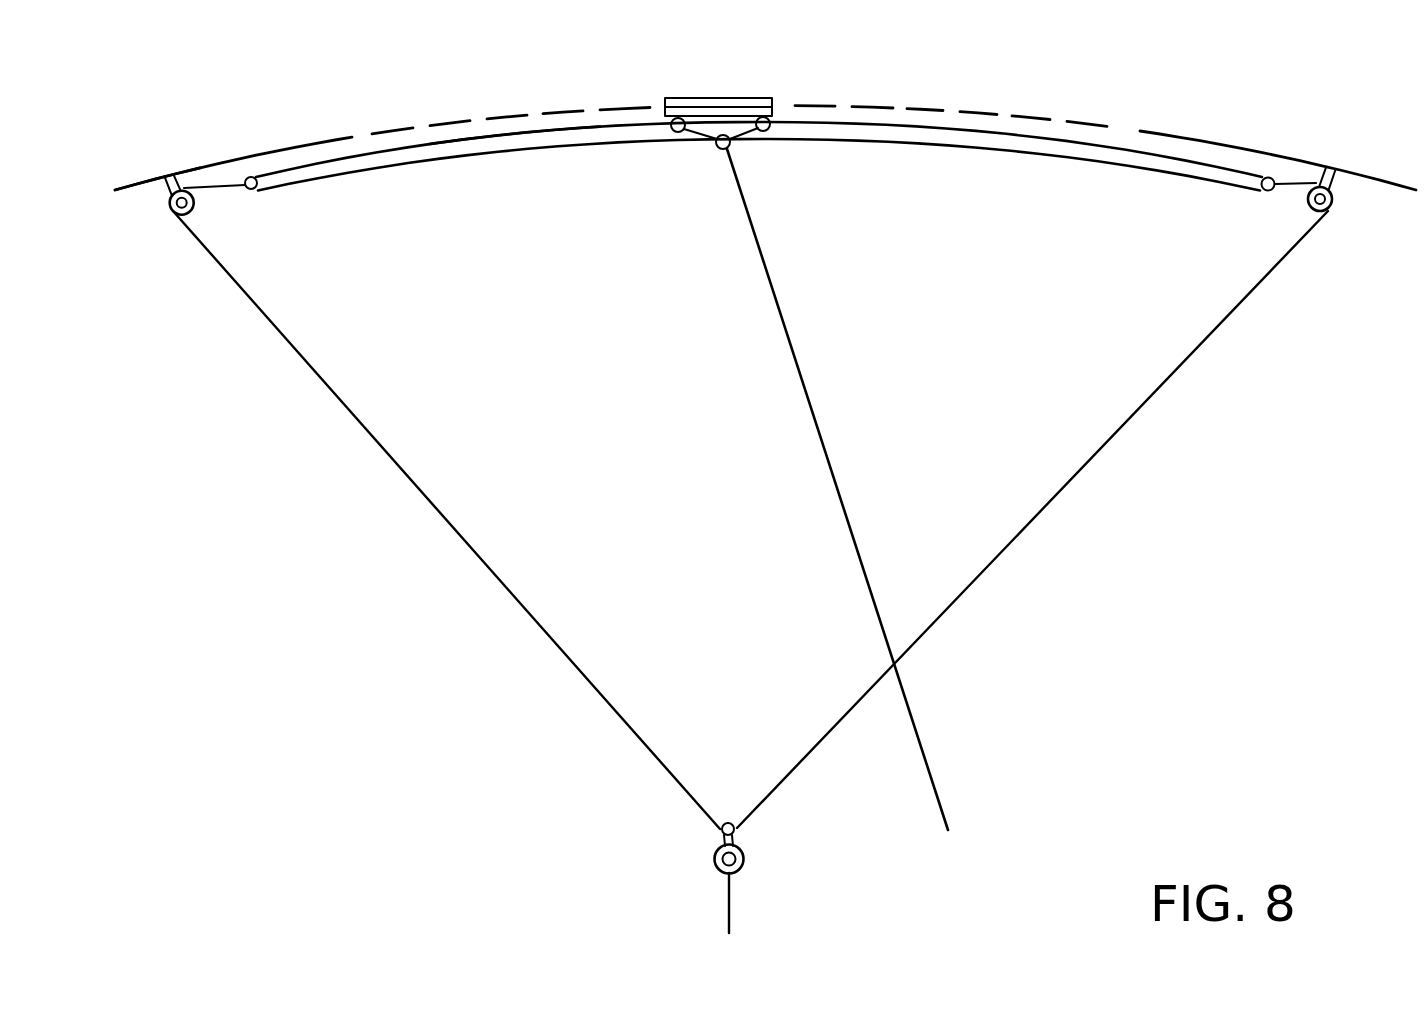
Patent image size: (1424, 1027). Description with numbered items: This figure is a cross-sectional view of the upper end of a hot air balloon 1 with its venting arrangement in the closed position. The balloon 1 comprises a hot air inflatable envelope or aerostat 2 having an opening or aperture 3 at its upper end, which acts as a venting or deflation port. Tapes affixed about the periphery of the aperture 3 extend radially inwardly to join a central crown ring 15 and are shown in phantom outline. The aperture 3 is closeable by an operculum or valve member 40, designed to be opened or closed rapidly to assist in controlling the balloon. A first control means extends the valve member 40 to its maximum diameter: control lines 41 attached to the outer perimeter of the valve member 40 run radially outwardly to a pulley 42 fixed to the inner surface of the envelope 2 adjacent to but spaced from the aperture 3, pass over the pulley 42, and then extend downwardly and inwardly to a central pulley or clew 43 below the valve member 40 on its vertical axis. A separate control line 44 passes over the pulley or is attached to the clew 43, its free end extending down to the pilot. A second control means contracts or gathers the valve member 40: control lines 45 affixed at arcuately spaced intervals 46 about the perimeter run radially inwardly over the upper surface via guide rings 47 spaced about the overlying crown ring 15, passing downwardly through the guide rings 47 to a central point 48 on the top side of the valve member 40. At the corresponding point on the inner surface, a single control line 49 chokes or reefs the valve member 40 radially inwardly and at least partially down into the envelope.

The hot air balloon 1 is at (162, 164).
The envelope 2 is at (127, 191).
The aperture 3 is at (926, 99).
The crown ring 15 is at (727, 98).
The valve member 40 is at (517, 152).
The control lines 41 is at (217, 192).
The pulley 42 is at (175, 211).
The clew 43 is at (714, 853).
The control line 44 is at (731, 908).
The control lines 45 is at (502, 137).
The arcuately spaced intervals 46 is at (247, 179).
The guide rings 47 is at (678, 133).
The central point 48 is at (732, 147).
The control line 49 is at (798, 377).